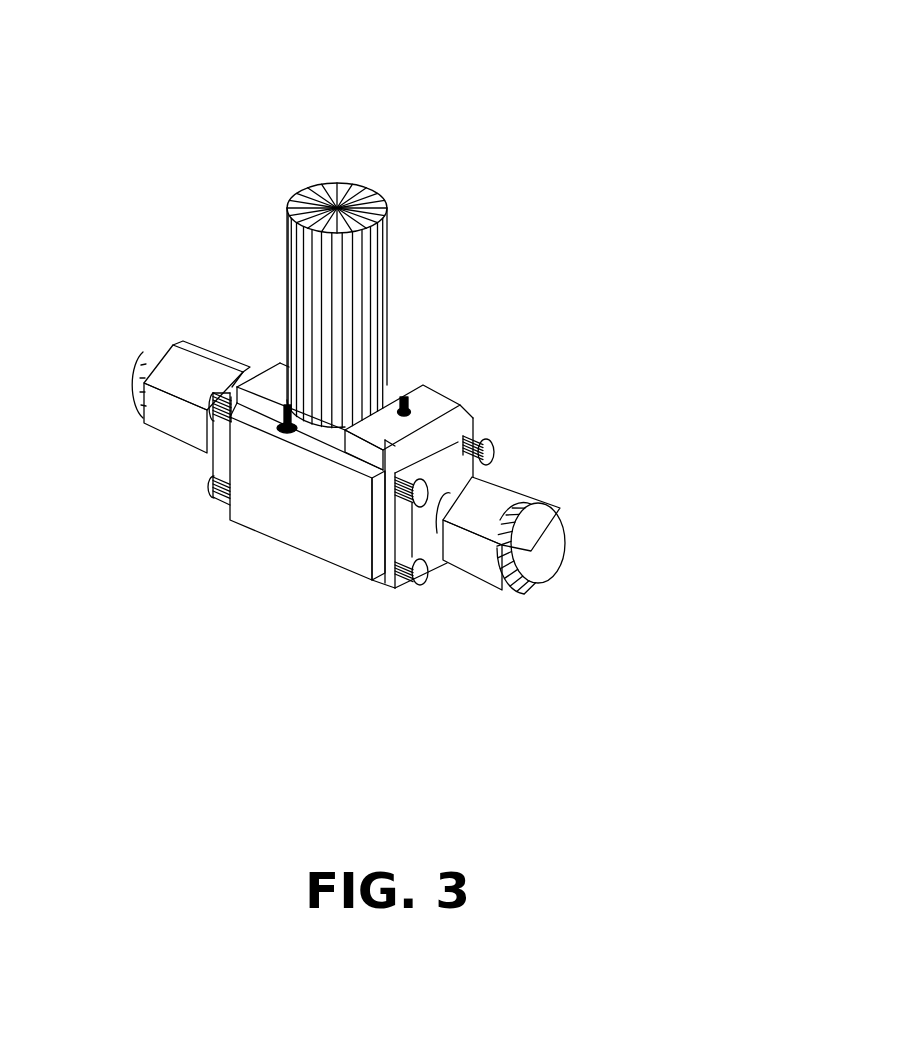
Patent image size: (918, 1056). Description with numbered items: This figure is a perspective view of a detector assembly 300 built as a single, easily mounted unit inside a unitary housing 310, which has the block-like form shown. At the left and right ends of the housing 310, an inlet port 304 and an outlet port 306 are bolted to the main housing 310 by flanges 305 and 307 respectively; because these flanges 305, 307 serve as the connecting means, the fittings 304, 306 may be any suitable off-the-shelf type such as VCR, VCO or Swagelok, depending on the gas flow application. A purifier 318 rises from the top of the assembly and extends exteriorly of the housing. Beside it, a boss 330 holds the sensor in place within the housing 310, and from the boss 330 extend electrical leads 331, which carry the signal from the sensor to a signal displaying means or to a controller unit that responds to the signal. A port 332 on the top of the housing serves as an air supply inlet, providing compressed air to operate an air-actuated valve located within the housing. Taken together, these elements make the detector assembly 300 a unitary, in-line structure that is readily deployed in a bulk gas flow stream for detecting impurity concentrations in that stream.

The detector assembly 300 is at (662, 315).
The inlet port 304 is at (152, 357).
The flange 305 is at (266, 372).
The outlet port 306 is at (560, 513).
The flange 307 is at (490, 463).
The unitary housing 310 is at (298, 552).
The purifier 318 is at (367, 185).
The boss 330 is at (447, 395).
The electrical leads 331 is at (392, 386).
The port 332 is at (275, 422).